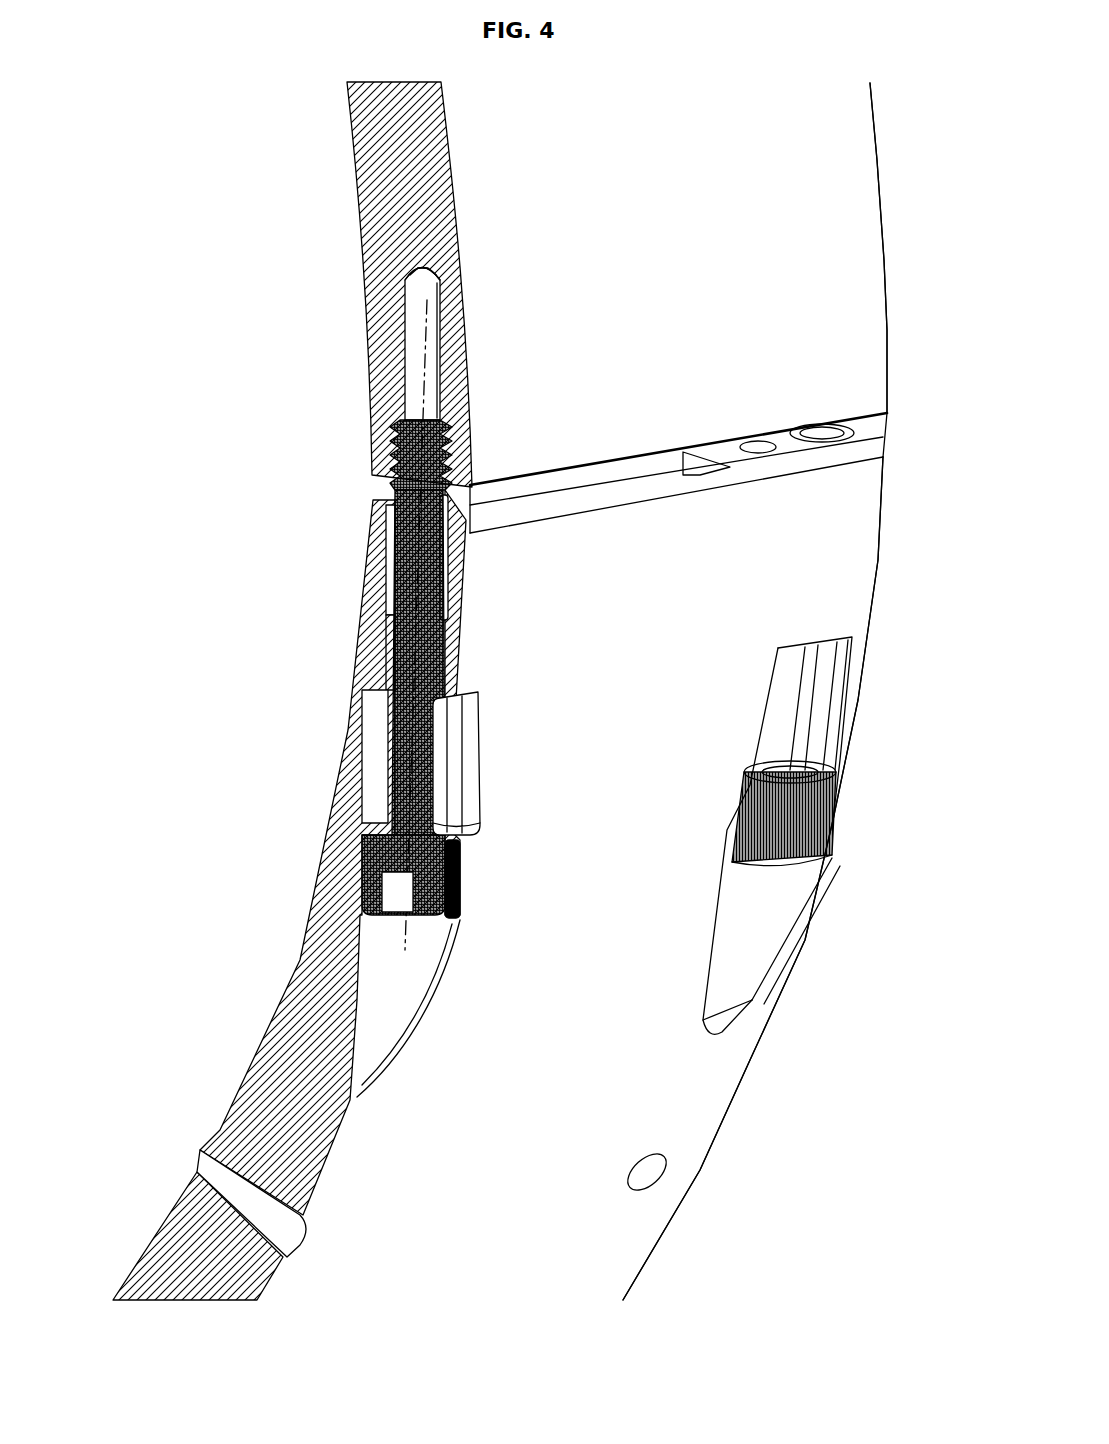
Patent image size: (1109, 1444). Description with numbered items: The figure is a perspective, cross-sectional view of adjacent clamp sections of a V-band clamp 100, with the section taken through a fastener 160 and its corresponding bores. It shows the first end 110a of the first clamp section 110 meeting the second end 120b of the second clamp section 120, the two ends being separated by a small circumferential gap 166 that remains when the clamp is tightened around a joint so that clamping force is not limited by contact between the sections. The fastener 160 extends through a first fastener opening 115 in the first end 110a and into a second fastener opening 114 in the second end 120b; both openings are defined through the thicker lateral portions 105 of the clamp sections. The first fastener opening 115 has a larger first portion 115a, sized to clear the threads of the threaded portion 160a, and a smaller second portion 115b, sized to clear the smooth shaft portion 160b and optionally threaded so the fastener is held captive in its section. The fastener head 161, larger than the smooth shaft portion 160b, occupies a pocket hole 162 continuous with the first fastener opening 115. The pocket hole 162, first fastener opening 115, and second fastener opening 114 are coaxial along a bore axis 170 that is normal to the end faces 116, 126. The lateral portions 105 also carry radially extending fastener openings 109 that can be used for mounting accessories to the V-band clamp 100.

The V-band clamp 100 is at (157, 167).
The lateral portions 105 is at (175, 1200).
The fastener openings 109 is at (245, 1182).
The first clamp section 110 is at (880, 556).
The first end of the first clamp section 110a is at (744, 878).
The second fastener opening 114 is at (410, 357).
The first fastener opening 115 is at (383, 548).
The first portion of the first fastener opening 115a is at (392, 594).
The second portion of the first fastener opening 115b is at (393, 645).
The end face 116 is at (743, 458).
The second clamp section 120 is at (886, 160).
The second end of the second clamp section 120b is at (753, 247).
The end face 126 is at (628, 458).
The fastener 160 is at (395, 768).
The threaded portion of the fastener 160a is at (400, 458).
The smooth shaft portion of the fastener 160b is at (392, 714).
The fastener head 161 is at (376, 848).
The pocket hole 162 is at (388, 978).
The circumferential gap 166 is at (860, 432).
The bore axis 170 is at (428, 308).